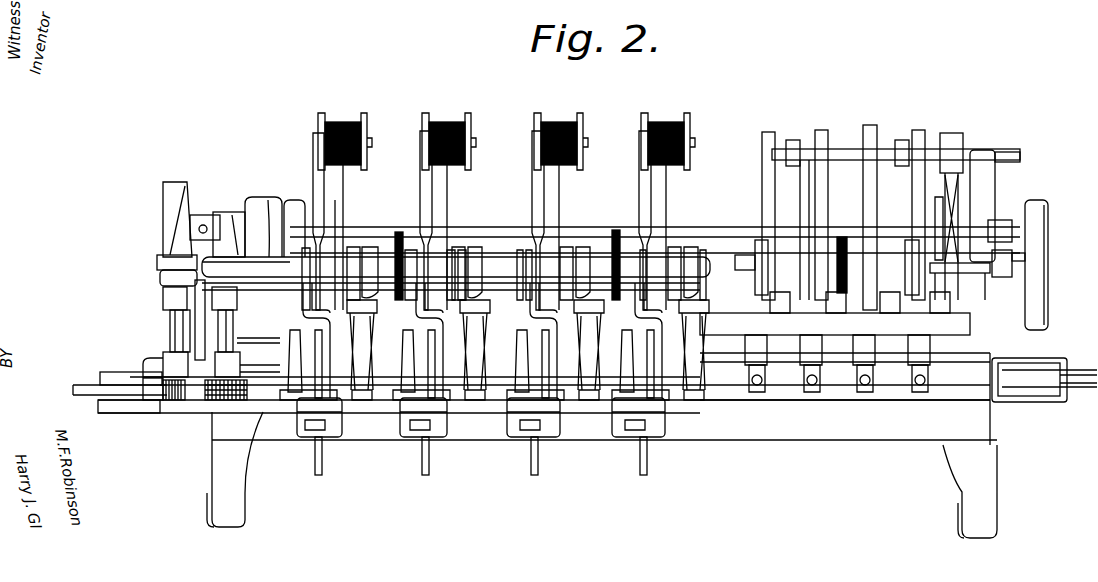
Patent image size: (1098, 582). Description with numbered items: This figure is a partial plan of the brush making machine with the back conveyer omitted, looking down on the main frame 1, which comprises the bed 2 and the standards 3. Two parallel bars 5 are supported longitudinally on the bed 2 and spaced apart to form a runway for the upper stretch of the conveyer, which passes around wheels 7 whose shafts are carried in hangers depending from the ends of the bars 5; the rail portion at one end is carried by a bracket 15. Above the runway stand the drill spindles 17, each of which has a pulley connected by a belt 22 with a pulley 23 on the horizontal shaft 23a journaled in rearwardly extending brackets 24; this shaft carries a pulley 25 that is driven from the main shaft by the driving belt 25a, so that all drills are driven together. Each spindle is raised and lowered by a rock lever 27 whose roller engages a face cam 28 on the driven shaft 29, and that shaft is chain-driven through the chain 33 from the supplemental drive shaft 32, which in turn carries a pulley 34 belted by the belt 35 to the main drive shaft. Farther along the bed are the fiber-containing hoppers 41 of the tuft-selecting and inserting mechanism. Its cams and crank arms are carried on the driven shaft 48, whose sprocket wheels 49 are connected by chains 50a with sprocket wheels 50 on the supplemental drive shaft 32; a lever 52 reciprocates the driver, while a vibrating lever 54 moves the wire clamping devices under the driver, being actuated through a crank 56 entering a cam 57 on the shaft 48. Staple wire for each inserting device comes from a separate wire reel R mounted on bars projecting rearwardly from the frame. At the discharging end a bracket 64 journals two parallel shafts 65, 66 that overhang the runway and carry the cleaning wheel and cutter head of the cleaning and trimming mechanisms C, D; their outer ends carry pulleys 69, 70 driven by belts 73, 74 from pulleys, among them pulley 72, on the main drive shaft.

The main frame 1 is at (866, 445).
The bed 2 is at (772, 437).
The standards 3 is at (212, 472).
The bars 5 is at (116, 375).
The wheels 7 is at (84, 384).
The end bracket 15 is at (1008, 402).
The drill spindles 17 is at (752, 392).
The belt 22 is at (762, 186).
The pulley 23 is at (788, 142).
The horizontal shaft 23a is at (845, 148).
The brackets 24 is at (995, 180).
The pulley 25 is at (963, 142).
The driving belt 25a is at (954, 160).
The rock lever 27 is at (778, 345).
The face cam 28 is at (762, 250).
The driven shaft 29 is at (745, 262).
The supplemental drive shaft 32 is at (972, 266).
The chain 33 is at (842, 237).
The pulley 34 is at (1050, 212).
The belt 35 is at (1036, 255).
The fiber-containing hoppers 41 is at (304, 440).
The driven shaft 48 is at (271, 243).
The sprocket wheels 49 is at (398, 230).
The sprocket wheels 50 is at (402, 243).
The chains 50a is at (400, 233).
The lever 52 is at (404, 312).
The vibrating lever 54 is at (362, 400).
The crank 56 is at (705, 316).
The cam 57 is at (368, 248).
The bracket 64 is at (160, 360).
The shaft 65 is at (170, 316).
The shaft 66 is at (233, 329).
The pulley 69 is at (160, 262).
The pulley 70 is at (162, 282).
The pulley 72 is at (163, 208).
The belt 73 is at (236, 262).
The belt 74 is at (174, 182).
The wire reel R is at (325, 128).
The cleaning mechanism C is at (216, 402).
The trimming mechanism D is at (175, 402).